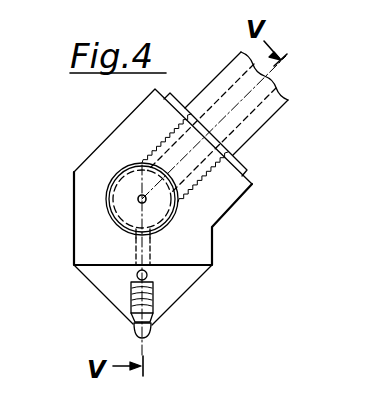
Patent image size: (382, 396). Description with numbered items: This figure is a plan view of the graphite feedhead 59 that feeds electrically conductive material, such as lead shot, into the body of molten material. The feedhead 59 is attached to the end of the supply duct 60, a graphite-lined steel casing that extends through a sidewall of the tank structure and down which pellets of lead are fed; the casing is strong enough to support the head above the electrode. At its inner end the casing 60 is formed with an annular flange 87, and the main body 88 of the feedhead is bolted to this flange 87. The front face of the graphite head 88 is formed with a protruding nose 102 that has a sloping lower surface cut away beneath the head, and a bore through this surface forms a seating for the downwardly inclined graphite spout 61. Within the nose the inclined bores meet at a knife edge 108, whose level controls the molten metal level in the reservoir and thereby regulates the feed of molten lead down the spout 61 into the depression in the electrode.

The graphite feedhead 59 is at (219, 235).
The supply duct 60 is at (256, 134).
The graphite spout 61 is at (151, 331).
The annular flange 87 is at (246, 172).
The main body of the graphite feedhead 88 is at (105, 146).
The protruding nose 102 is at (190, 287).
The knife edge 108 is at (137, 277).